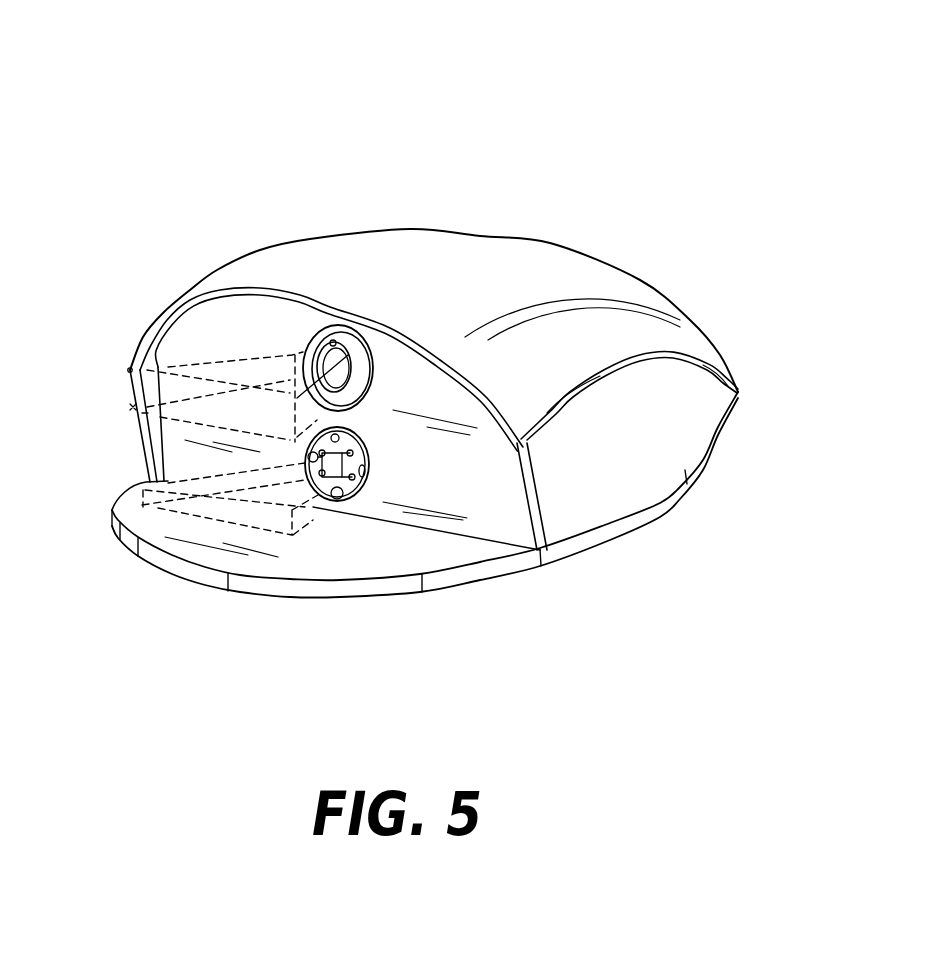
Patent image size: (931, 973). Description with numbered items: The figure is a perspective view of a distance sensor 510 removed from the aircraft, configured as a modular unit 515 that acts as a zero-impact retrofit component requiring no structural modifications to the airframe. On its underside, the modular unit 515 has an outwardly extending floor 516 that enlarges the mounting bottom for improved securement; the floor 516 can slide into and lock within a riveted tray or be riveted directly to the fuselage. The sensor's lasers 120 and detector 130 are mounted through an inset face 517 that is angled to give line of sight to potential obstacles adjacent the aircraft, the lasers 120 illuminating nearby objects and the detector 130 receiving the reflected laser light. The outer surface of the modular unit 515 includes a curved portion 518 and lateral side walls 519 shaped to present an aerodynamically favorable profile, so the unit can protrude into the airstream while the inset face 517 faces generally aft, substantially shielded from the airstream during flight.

The modular unit 515 is at (359, 87).
The distance sensor 510 is at (267, 212).
The curved portion 518 is at (544, 267).
The lateral side walls 519 is at (647, 437).
The inset face 517 is at (490, 490).
The floor 516 is at (455, 583).
The detector 130 is at (312, 355).
The lasers 120 is at (350, 495).